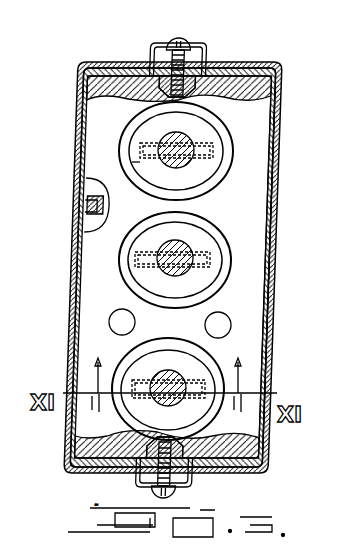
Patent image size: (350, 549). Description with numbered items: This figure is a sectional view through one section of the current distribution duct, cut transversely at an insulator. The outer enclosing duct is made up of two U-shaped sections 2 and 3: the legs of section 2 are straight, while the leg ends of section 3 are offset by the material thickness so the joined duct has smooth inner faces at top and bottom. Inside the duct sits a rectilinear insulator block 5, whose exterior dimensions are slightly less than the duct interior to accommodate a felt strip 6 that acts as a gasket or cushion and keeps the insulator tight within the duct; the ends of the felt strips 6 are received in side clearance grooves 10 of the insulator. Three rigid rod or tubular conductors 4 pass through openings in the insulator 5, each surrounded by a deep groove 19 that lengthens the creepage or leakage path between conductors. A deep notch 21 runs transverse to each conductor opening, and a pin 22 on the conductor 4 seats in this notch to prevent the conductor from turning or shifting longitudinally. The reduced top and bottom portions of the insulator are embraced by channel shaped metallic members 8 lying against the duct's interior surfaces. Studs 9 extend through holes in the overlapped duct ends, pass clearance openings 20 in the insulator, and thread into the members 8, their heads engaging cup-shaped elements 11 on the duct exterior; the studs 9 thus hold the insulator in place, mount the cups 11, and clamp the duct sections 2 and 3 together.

The U-shaped section 2 is at (105, 64).
The U-shaped section 3 is at (253, 70).
The conductor section 4 is at (182, 143).
The insulator block 5 is at (256, 160).
The felt strip 6 is at (272, 130).
The channel shaped metallic member 8 is at (260, 77).
The stud 9 is at (187, 43).
The side clearance groove 10 is at (86, 190).
The cup-shaped element 11 is at (158, 50).
The deep groove 19 is at (217, 246).
The clearance opening 20 is at (193, 87).
The deep notch 21 is at (207, 166).
The pin 22 is at (132, 162).